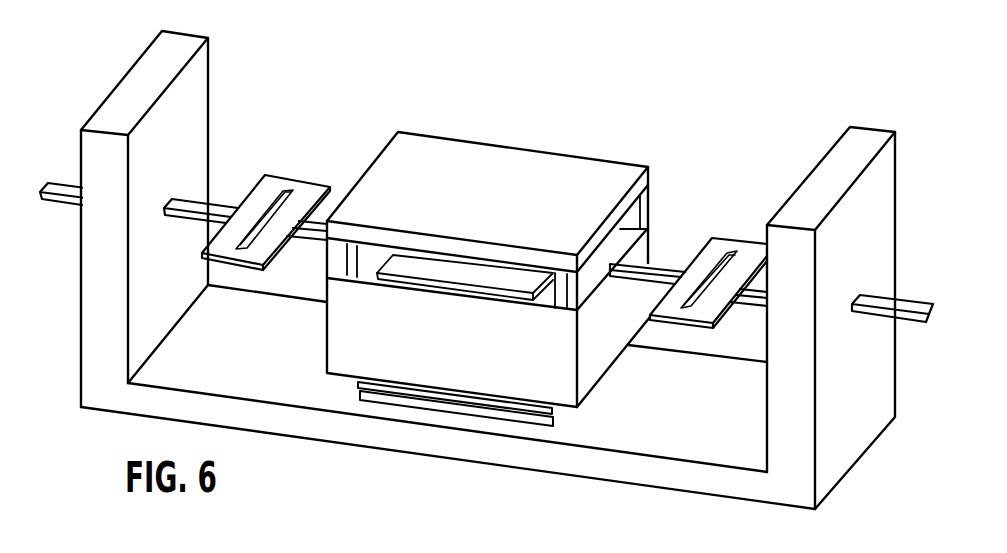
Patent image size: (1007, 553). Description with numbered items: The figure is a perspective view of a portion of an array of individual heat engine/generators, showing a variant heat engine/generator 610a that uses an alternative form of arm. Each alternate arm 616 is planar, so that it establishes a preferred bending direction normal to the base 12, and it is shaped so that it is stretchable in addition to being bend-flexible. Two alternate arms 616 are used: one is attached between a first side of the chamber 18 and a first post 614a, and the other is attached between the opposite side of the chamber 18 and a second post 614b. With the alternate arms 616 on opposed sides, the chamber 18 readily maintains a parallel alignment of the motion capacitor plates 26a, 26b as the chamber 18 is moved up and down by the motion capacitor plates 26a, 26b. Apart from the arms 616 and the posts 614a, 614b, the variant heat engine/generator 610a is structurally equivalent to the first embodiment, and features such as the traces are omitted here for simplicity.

The base 12 is at (693, 491).
The chamber 18 is at (603, 343).
The motion capacitor plate 26a is at (358, 383).
The motion capacitor plate 26b is at (363, 392).
The variant heat engine/generator 610a is at (485, 124).
The first post 614a is at (860, 137).
The second post 614b is at (185, 42).
The alternate arm 616 is at (293, 183).